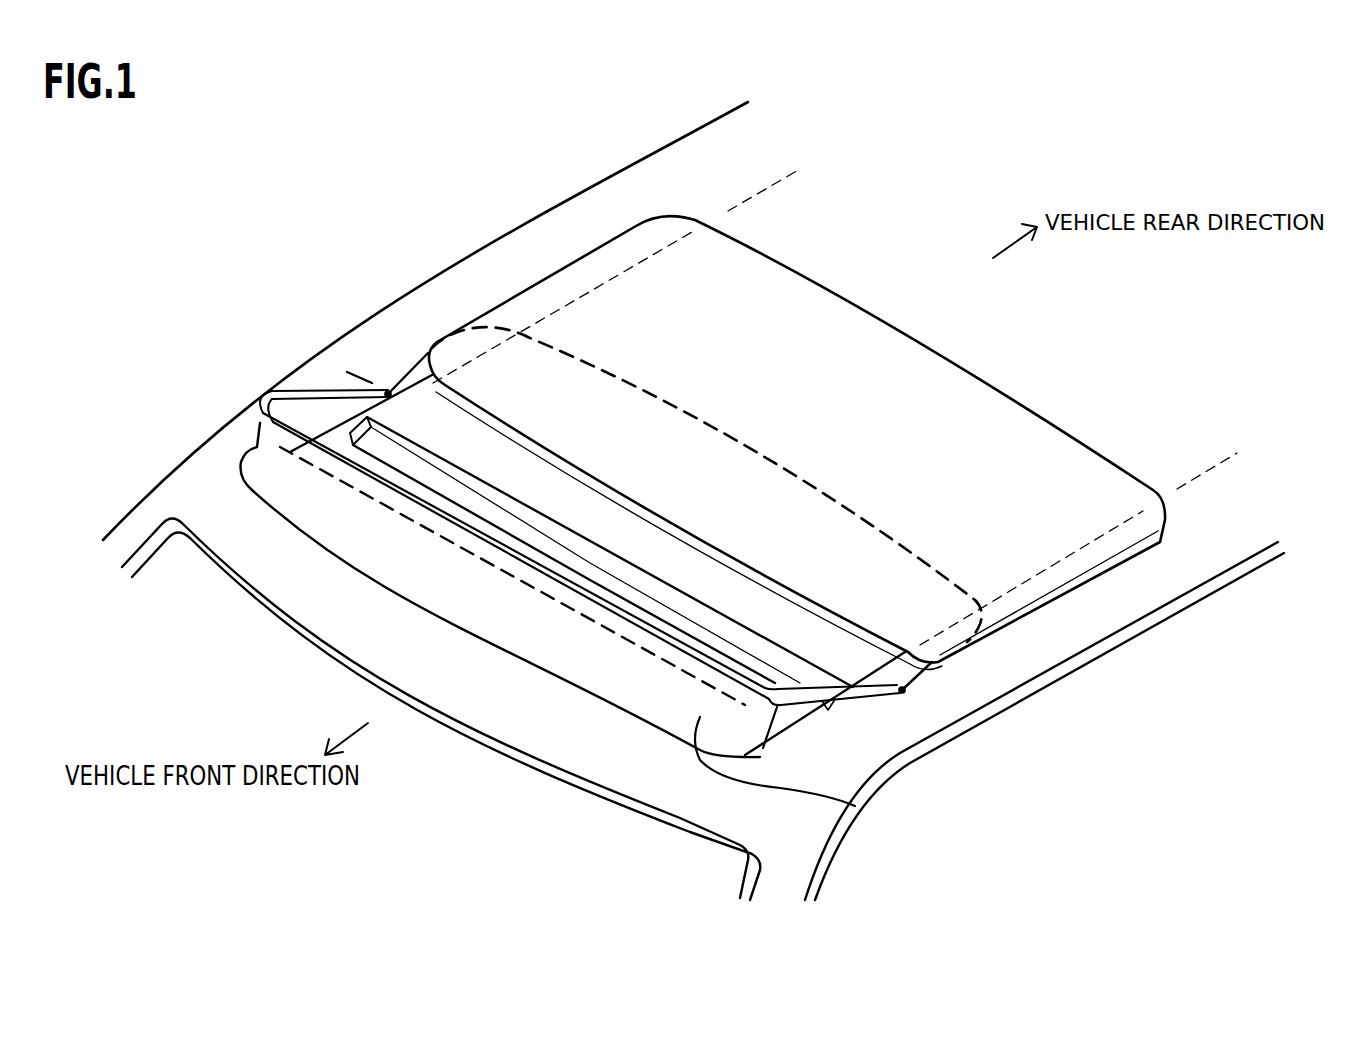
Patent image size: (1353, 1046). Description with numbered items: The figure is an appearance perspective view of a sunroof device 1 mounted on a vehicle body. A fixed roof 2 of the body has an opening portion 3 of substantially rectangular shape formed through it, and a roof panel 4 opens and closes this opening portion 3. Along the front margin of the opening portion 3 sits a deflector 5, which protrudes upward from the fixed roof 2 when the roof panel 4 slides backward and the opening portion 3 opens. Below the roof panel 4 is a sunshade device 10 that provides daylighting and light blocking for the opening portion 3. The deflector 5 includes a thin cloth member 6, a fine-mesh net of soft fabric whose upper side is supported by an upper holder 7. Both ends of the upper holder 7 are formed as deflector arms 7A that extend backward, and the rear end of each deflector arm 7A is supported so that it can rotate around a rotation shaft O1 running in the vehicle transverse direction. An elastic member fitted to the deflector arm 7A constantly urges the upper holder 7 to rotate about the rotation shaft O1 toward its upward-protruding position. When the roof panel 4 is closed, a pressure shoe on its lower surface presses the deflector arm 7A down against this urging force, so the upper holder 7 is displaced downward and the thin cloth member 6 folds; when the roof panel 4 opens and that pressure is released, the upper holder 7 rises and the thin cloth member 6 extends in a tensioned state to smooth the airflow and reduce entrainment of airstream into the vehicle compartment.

The sunroof device 1 is at (320, 328).
The fixed roof 2 is at (1047, 647).
The opening portion 3 is at (388, 367).
The roof panel 4 is at (567, 280).
The deflector 5 is at (250, 436).
The thin cloth member 6 is at (855, 806).
The upper holder 7 is at (560, 567).
The deflector arm 7A is at (310, 395).
The sunshade device 10 is at (552, 500).
The rotation shaft O1 is at (403, 405).